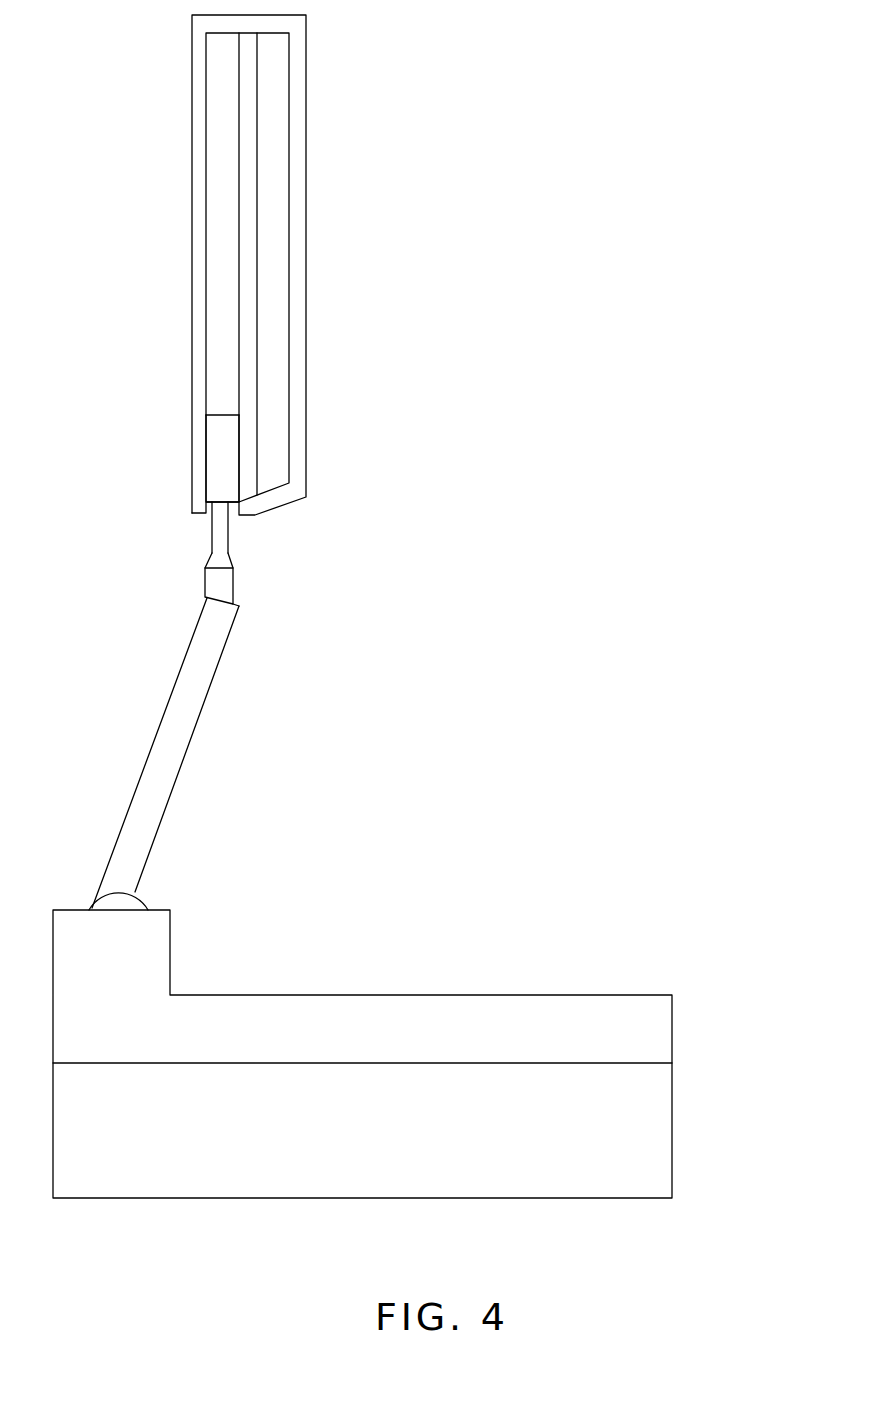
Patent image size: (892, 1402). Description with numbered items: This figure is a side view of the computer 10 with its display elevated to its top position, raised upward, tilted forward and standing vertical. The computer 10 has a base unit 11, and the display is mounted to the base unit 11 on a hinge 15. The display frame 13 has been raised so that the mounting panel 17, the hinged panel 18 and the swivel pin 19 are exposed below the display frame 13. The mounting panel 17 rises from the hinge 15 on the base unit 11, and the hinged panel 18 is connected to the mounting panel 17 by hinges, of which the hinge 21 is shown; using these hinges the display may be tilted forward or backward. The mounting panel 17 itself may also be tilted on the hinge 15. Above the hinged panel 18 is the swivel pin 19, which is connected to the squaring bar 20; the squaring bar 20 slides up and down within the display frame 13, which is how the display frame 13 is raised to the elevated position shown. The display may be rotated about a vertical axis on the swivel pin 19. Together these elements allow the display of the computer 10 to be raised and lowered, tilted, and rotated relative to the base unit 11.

The computer 10 is at (277, 1272).
The base unit 11 is at (677, 1052).
The display frame 13 is at (193, 113).
The hinge 15 is at (136, 904).
The mounting panel 17 is at (157, 733).
The hinged panel 18 is at (218, 580).
The swivel pin 19 is at (220, 537).
The squaring bar 20 is at (218, 448).
The hinge 21 is at (239, 604).